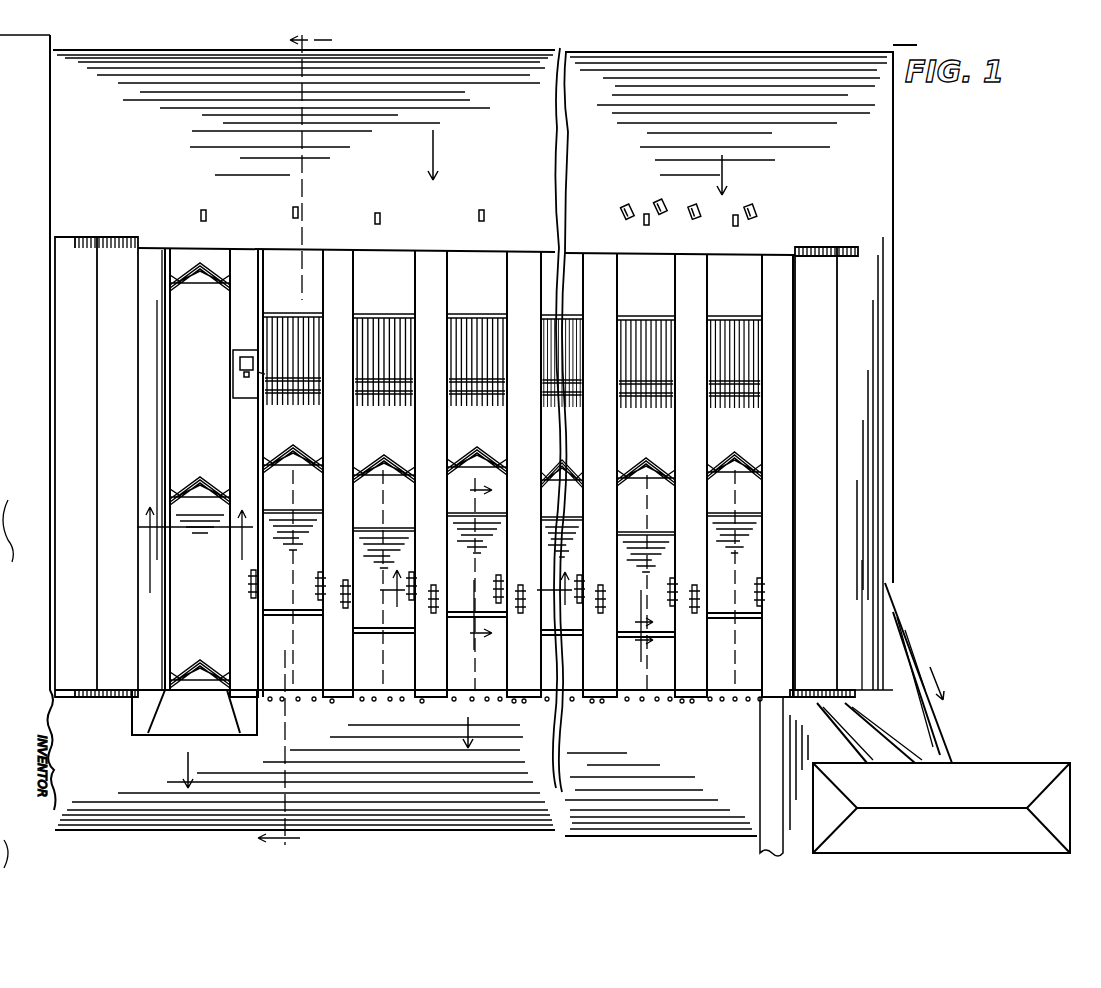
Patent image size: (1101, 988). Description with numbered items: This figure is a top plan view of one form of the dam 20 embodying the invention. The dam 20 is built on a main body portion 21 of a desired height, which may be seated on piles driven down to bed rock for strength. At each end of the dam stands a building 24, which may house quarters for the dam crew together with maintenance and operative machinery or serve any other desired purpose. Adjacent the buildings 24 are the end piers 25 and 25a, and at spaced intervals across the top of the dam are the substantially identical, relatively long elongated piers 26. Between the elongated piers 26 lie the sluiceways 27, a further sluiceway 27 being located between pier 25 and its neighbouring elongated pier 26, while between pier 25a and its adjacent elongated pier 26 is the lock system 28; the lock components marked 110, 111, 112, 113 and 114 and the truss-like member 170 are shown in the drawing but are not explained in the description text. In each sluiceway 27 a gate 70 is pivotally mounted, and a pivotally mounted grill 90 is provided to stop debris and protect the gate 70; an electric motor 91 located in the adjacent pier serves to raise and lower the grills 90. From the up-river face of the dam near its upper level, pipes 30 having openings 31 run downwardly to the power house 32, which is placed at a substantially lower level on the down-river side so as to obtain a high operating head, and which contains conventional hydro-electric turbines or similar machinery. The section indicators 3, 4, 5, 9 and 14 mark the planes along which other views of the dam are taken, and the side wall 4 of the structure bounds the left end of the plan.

The section line 3- 3 is at (304, 441).
The side wall / section line 4- 4 is at (58, 397).
The section line 5- 5 is at (470, 579).
The section line 9- 9 is at (195, 550).
The section line 14- 14 is at (643, 629).
The dam 20 is at (778, 247).
The main body portion 21 is at (655, 827).
The building 24 is at (872, 473).
The pier 25 is at (783, 275).
The pier 25a is at (157, 258).
The elongated pier 26 is at (257, 260).
The sluiceway 27 is at (311, 266).
The lock system 28 is at (195, 261).
The pipe 30 is at (903, 618).
The opening 31 is at (657, 208).
The power house 32 is at (1002, 780).
The gate 70 is at (643, 545).
The grill 90 is at (305, 398).
The electric motor 91 is at (249, 358).
The door panel 110 is at (197, 469).
The door lower section 111 is at (200, 572).
The door upper truss 112 is at (213, 281).
The door middle truss 113 is at (200, 487).
The door bottom truss 114 is at (196, 667).
The roof truss 170 is at (280, 458).